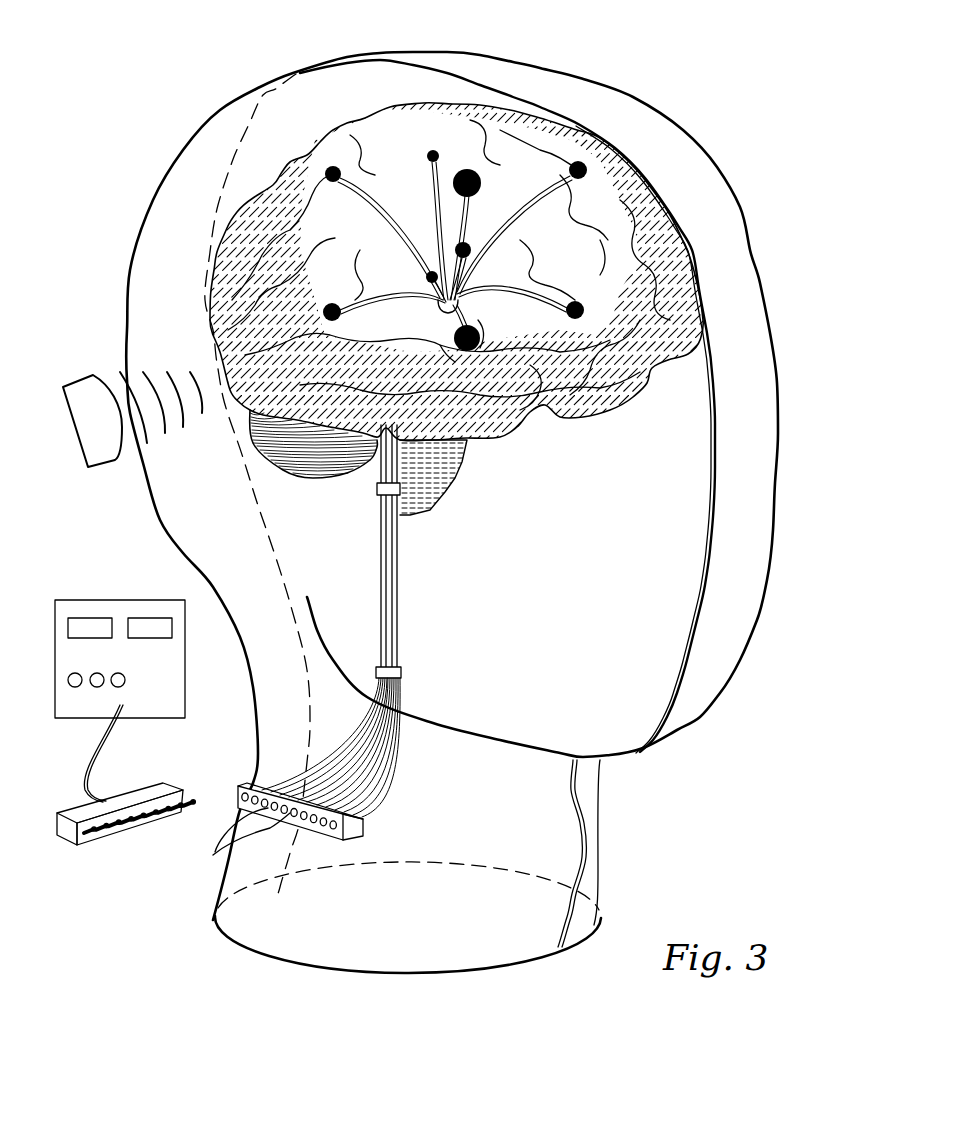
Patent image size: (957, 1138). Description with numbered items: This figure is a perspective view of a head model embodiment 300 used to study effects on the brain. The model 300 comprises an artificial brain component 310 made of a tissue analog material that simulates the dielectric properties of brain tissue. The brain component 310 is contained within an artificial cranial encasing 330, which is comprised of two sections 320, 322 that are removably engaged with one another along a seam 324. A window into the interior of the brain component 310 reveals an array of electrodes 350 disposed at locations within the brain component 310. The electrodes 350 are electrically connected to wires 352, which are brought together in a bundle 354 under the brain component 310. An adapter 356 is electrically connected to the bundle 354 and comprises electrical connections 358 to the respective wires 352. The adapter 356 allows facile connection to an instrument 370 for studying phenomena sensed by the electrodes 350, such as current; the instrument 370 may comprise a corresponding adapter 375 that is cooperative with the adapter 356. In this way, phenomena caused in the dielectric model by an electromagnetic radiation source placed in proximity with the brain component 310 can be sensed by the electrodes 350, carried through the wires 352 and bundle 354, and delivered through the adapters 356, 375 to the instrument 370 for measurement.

The model embodiment 300 is at (718, 827).
The artificial brain component 310 is at (665, 283).
The section 320 is at (690, 180).
The section 322 is at (338, 95).
The seam 324 is at (472, 80).
The artificial cranial encasing 330 is at (740, 700).
The electrodes 350 is at (575, 318).
The wires 352 is at (566, 225).
The bundle 354 is at (395, 550).
The adapter 356 is at (243, 786).
The electrical connections 358 is at (239, 844).
The instrument 370 is at (100, 597).
The corresponding adapter 375 is at (68, 840).